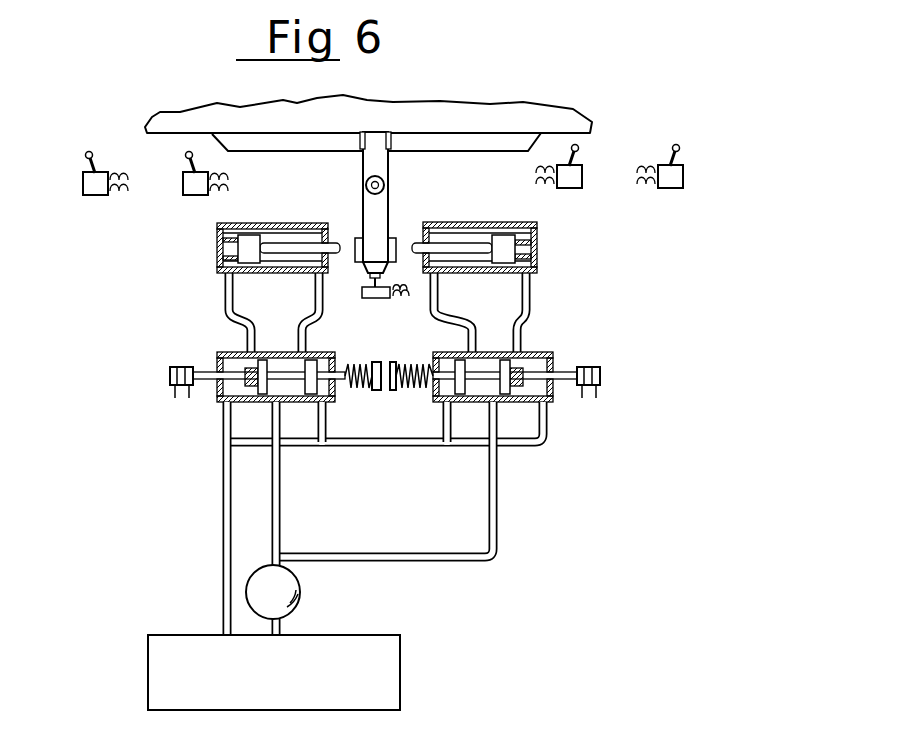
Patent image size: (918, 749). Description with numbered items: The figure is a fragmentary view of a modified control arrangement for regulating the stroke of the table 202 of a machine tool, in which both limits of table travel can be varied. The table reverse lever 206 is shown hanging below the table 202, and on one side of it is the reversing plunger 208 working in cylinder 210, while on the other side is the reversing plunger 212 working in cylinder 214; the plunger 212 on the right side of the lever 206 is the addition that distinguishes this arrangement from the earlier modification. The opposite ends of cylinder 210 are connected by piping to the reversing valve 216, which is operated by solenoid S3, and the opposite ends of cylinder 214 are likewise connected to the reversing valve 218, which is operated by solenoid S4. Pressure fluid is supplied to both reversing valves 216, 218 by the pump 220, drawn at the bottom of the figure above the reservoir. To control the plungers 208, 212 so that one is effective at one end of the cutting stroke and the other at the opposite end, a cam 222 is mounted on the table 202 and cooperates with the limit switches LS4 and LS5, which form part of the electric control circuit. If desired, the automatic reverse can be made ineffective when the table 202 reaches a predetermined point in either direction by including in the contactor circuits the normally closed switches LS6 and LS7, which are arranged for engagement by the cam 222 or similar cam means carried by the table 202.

The table 202 is at (474, 126).
The cam 222 is at (480, 142).
The table reverse lever 206 is at (372, 172).
The reversing plunger 208 is at (244, 246).
The cylinder 210 is at (217, 232).
The reversing plunger 212 is at (535, 261).
The cylinder 214 is at (536, 225).
The reversing valve 216 is at (230, 348).
The reversing valve 218 is at (543, 350).
The pump 220 is at (301, 593).
The operating solenoid S3 is at (170, 373).
The operating solenoid S4 is at (604, 372).
The limit switch LS4 is at (566, 191).
The limit switch LS5 is at (192, 197).
The normally closed switch LS6 is at (670, 191).
The normally closed switch LS7 is at (92, 197).